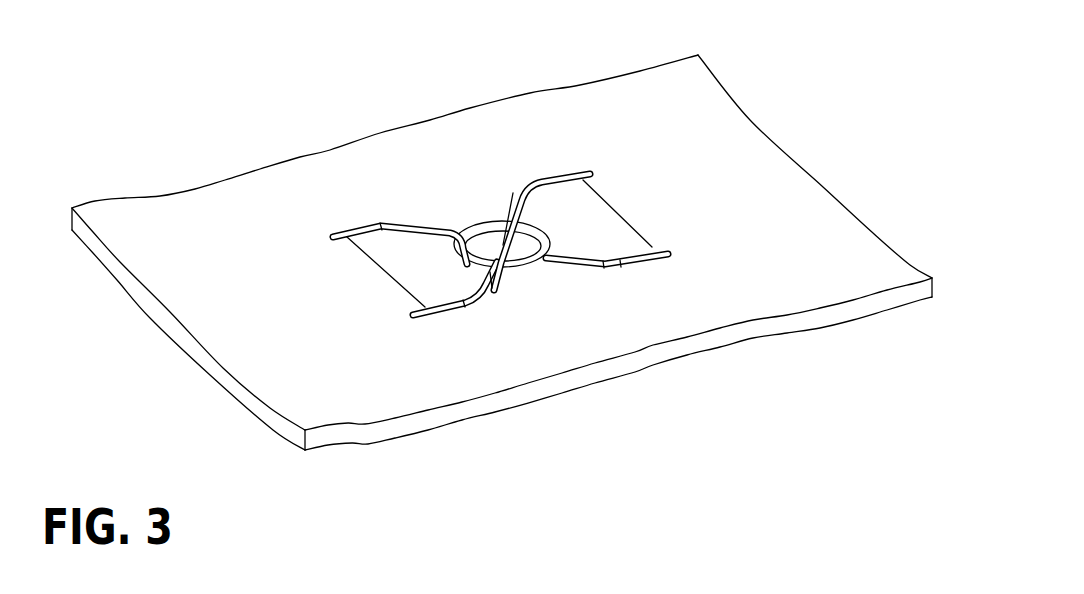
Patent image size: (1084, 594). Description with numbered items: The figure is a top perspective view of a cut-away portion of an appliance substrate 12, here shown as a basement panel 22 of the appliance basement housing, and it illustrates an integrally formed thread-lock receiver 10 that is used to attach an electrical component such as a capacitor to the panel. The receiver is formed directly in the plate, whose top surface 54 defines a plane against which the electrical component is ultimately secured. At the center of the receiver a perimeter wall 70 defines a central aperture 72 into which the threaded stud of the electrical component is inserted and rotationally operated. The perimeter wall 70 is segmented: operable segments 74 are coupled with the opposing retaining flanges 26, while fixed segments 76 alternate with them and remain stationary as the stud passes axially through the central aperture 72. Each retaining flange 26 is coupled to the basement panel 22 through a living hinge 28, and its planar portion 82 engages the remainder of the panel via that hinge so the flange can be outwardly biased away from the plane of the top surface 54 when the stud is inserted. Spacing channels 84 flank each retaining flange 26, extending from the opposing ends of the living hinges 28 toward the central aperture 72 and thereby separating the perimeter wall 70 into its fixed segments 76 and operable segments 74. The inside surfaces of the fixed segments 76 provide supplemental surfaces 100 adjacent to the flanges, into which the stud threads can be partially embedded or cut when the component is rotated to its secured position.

The thread-lock receiver 10 is at (360, 184).
The substrate 12 is at (843, 253).
The basement panel 22 is at (187, 305).
The retaining flange 26 is at (604, 228).
The living hinge 28 is at (647, 235).
The top surface 54 is at (232, 257).
The perimeter wall 70 is at (488, 247).
The central aperture 72 is at (490, 254).
The operable segment 74 is at (541, 225).
The fixed segment 76 is at (480, 242).
The planar portion 82 is at (407, 265).
The spacing channel 84 is at (578, 262).
The supplemental surface 100 is at (495, 270).